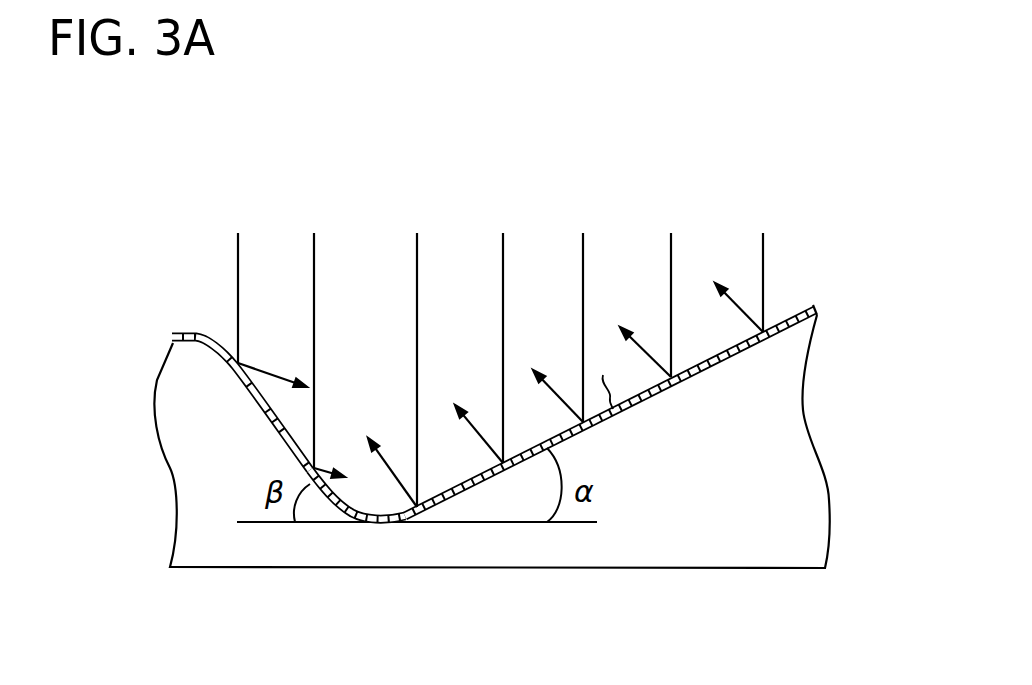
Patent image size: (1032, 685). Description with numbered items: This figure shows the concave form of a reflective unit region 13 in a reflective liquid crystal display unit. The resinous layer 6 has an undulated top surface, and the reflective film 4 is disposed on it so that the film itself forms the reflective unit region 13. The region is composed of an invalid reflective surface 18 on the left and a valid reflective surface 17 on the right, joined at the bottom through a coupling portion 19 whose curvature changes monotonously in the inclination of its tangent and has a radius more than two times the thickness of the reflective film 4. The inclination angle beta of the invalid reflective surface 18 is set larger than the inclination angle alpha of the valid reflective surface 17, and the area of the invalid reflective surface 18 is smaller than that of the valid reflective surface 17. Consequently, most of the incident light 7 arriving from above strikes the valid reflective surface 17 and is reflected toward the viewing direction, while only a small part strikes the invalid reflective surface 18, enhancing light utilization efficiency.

The reflective film 4 is at (818, 309).
The resinous layer 6 is at (822, 502).
The incident light 7 is at (504, 349).
The reflective unit region 13 is at (536, 315).
The valid reflective surface 17 is at (784, 321).
The invalid reflective surface 18 is at (228, 350).
The coupling portion 19 is at (358, 509).